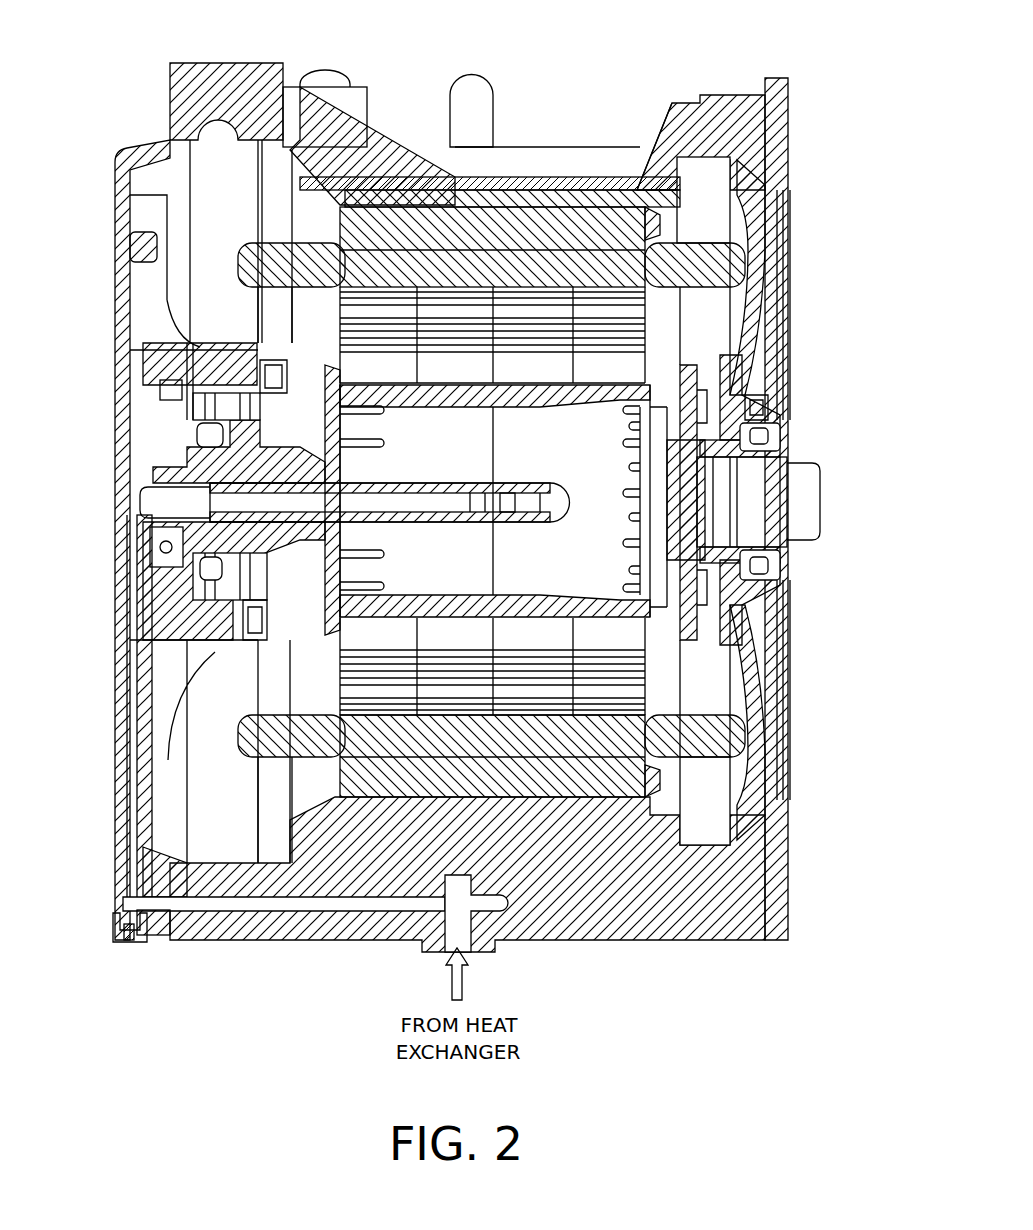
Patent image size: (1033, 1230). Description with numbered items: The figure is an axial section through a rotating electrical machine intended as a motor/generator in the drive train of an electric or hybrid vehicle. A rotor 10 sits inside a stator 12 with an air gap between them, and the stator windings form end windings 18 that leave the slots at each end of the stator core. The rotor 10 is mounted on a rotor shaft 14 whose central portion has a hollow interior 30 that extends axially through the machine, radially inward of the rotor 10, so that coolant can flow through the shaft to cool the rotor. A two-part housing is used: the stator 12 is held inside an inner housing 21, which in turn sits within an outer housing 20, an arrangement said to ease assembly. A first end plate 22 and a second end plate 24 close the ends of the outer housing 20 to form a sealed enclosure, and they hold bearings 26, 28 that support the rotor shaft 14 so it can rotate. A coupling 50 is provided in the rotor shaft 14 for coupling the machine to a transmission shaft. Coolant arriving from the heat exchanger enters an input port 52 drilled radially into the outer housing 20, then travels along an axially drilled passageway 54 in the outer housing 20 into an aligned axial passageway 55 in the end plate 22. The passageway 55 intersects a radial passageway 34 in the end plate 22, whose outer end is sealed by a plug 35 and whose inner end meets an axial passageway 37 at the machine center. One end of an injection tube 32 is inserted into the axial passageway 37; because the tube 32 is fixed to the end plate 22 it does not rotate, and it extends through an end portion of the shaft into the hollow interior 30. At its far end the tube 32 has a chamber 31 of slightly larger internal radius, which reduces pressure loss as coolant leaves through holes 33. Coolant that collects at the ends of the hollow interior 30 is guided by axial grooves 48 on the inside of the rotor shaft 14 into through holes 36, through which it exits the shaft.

The rotor 10 is at (479, 369).
The stator 12 is at (481, 240).
The rotor shaft 14 is at (408, 402).
The end windings 18 is at (261, 274).
The outer housing 20 is at (603, 155).
The inner housing 21 is at (545, 185).
The first end plate 22 is at (112, 275).
The second end plate 24 is at (790, 278).
The bearing 26 is at (185, 572).
The bearing 28 is at (778, 583).
The hollow interior 30 is at (548, 457).
The chamber 31 is at (508, 488).
The injection tube 32 is at (450, 515).
The holes 33 is at (508, 520).
The passageway 34 is at (137, 735).
The plug 35 is at (117, 940).
The through holes 36 is at (243, 388).
The axial passageway 37 is at (140, 497).
The grooves 48 is at (240, 605).
The coupling 50 is at (748, 509).
The input port 52 is at (478, 945).
The passageway 54 is at (275, 900).
The axial passageway 55 is at (157, 935).